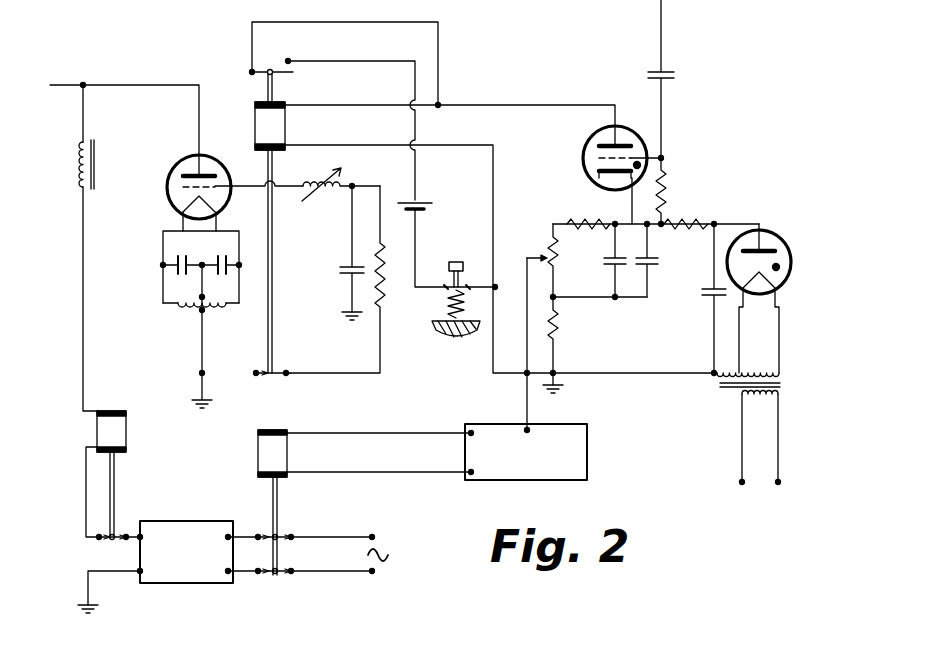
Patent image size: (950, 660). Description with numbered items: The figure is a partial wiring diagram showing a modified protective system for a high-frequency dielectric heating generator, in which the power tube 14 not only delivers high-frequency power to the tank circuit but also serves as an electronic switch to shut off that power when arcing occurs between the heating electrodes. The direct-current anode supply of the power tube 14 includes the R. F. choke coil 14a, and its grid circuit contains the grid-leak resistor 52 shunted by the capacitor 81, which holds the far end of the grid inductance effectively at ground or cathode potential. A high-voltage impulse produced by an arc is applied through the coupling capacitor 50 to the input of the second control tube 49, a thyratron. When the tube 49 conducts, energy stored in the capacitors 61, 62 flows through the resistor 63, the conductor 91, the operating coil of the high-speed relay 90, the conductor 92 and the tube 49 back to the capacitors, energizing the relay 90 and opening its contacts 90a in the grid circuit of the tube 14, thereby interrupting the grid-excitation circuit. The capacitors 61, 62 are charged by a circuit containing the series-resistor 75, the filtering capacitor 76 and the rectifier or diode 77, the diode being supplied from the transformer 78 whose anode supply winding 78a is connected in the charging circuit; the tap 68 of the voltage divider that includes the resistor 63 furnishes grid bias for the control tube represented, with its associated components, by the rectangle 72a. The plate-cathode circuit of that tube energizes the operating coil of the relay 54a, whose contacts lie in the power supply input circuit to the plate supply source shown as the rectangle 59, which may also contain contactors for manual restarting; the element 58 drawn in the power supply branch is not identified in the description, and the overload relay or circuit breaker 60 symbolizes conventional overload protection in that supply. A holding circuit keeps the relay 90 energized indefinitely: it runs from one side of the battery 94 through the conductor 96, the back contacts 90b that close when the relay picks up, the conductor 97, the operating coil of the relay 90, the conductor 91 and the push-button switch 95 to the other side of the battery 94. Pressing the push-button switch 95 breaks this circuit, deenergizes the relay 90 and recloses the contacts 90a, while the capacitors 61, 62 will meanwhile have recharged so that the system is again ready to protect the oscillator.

The power tube 14 is at (178, 160).
The R. F. choke coil 14a is at (97, 169).
The second control tube 49 is at (586, 140).
The coupling capacitor 50 is at (674, 78).
The grid resistor 52 is at (383, 260).
The relay 54a is at (272, 498).
The relay coil 58 is at (86, 386).
The supply means 59 is at (179, 528).
The overload relay or circuit breaker 60 is at (114, 480).
The capacitor 61 is at (612, 267).
The capacitor 62 is at (654, 268).
The resistor 63 is at (562, 326).
The tap 68 is at (548, 256).
The rectangle 72a is at (588, 442).
The series-resistor 75 is at (689, 210).
The filtering capacitor 76 is at (711, 290).
The rectifier or diode 77 is at (782, 252).
The transformer 78 is at (783, 386).
The anode supply winding 78a is at (722, 376).
The capacitor 81 is at (347, 274).
The high-speed relay 90 is at (275, 93).
The contacts 90a is at (262, 372).
The back contacts 90b is at (285, 69).
The conductor 91 is at (495, 185).
The conductor 92 is at (488, 100).
The battery 94 is at (424, 202).
The push-button switch 95 is at (446, 296).
The conductor 96 is at (414, 167).
The conductor 97 is at (440, 40).